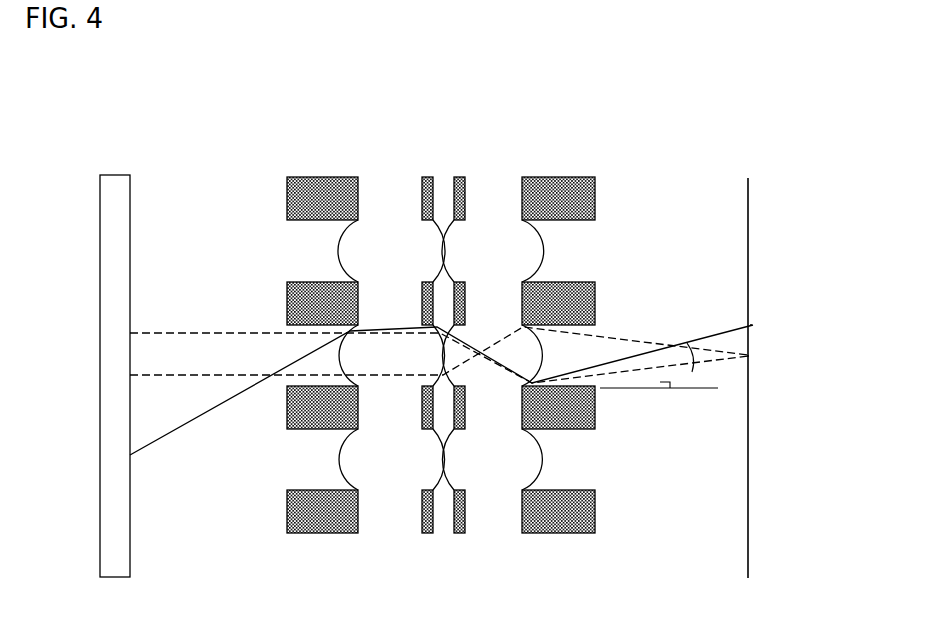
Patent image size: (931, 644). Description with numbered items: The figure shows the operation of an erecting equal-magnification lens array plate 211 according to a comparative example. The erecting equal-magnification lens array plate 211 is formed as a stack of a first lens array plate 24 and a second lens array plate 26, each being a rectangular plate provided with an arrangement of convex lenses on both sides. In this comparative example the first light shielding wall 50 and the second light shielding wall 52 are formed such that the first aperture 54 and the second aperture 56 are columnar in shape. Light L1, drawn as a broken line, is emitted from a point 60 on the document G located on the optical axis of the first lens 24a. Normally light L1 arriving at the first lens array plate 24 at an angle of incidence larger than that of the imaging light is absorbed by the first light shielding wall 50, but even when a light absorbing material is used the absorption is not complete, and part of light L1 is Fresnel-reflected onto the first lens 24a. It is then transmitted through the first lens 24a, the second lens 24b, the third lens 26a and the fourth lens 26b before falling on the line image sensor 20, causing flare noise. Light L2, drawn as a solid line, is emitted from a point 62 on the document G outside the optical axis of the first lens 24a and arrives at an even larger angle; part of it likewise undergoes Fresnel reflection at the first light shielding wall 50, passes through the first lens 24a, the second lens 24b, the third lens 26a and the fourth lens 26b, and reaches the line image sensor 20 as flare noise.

The line image sensor 20 is at (115, 175).
The erecting equal-magnification lens array plate 211 is at (330, 128).
The second lens array plate 26 is at (390, 201).
The first lens array plate 24 is at (488, 201).
The second aperture 56 is at (285, 355).
The first aperture 54 is at (588, 355).
The second light shielding wall 52 is at (287, 406).
The first light shielding wall 50 is at (596, 410).
The fourth lens 26b is at (340, 360).
The third lens 26a is at (447, 403).
The second lens 24b is at (447, 403).
The first lens 24a is at (544, 352).
The point 62 is at (753, 325).
The point 60 is at (750, 357).
The document G is at (750, 255).
The light L1 is at (181, 331).
The light L2 is at (162, 440).